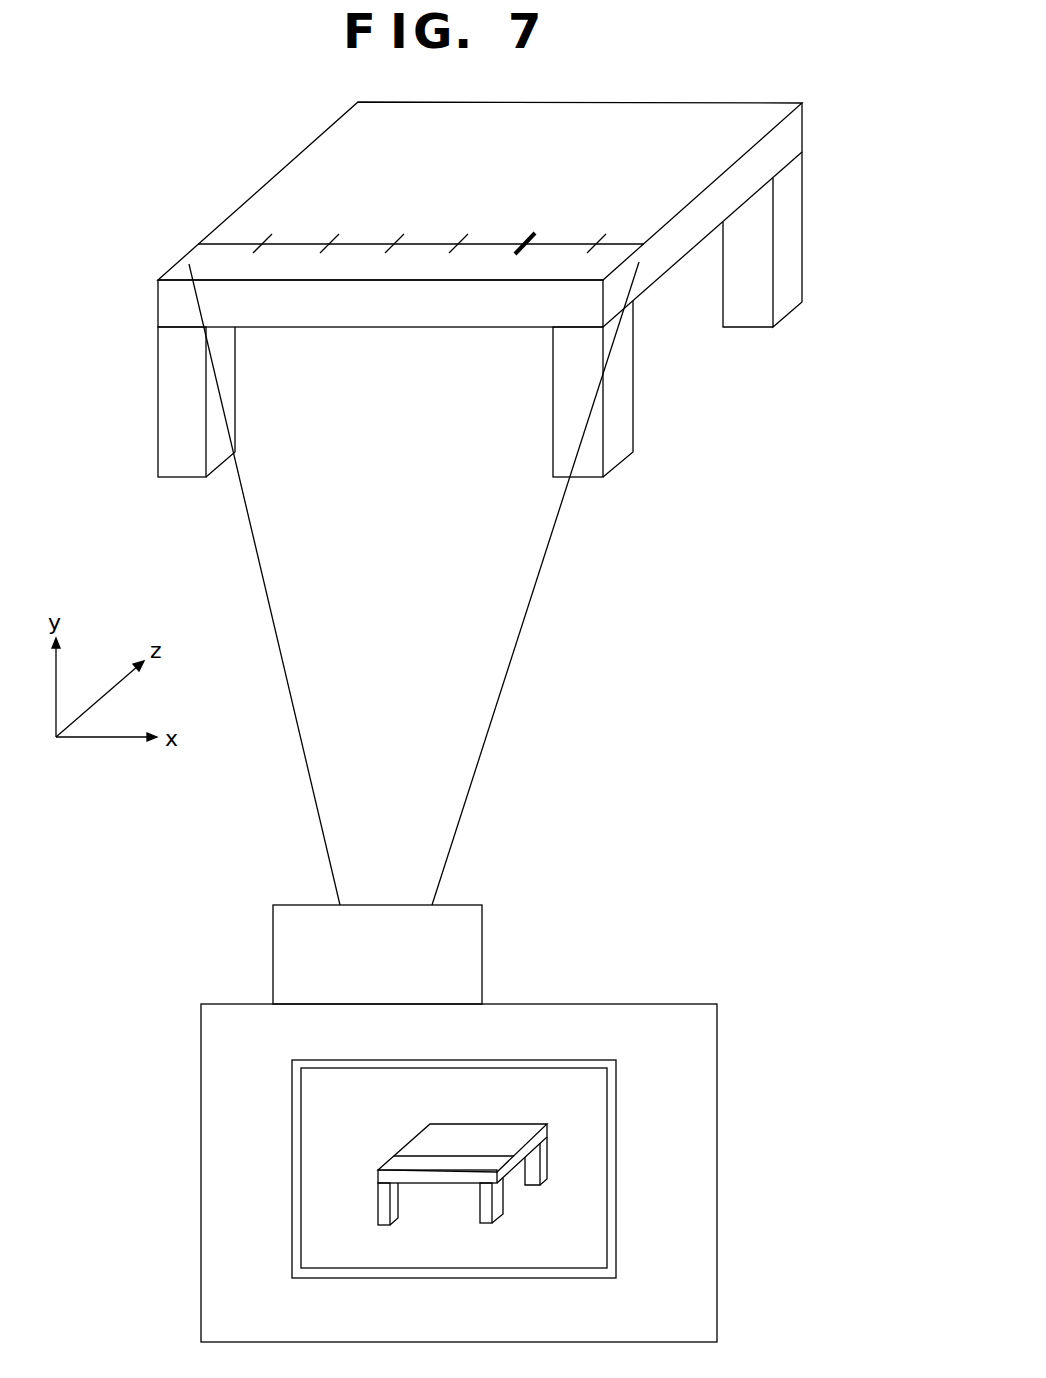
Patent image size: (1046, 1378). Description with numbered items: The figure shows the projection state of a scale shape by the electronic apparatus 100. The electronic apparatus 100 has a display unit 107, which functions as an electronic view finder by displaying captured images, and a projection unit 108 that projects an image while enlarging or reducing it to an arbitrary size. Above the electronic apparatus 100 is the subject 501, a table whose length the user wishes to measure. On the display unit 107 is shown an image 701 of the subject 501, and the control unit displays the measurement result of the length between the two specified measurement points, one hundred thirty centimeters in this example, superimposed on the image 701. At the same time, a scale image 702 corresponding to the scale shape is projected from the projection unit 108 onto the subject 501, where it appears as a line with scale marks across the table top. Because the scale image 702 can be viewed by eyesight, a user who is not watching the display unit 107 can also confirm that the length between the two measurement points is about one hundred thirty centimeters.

The subject 501 is at (802, 155).
The scale image 702 is at (397, 239).
The projection unit 108 is at (482, 928).
The electronic apparatus 100 is at (717, 1012).
The display unit 107 is at (616, 1098).
The image 701 is at (588, 1220).